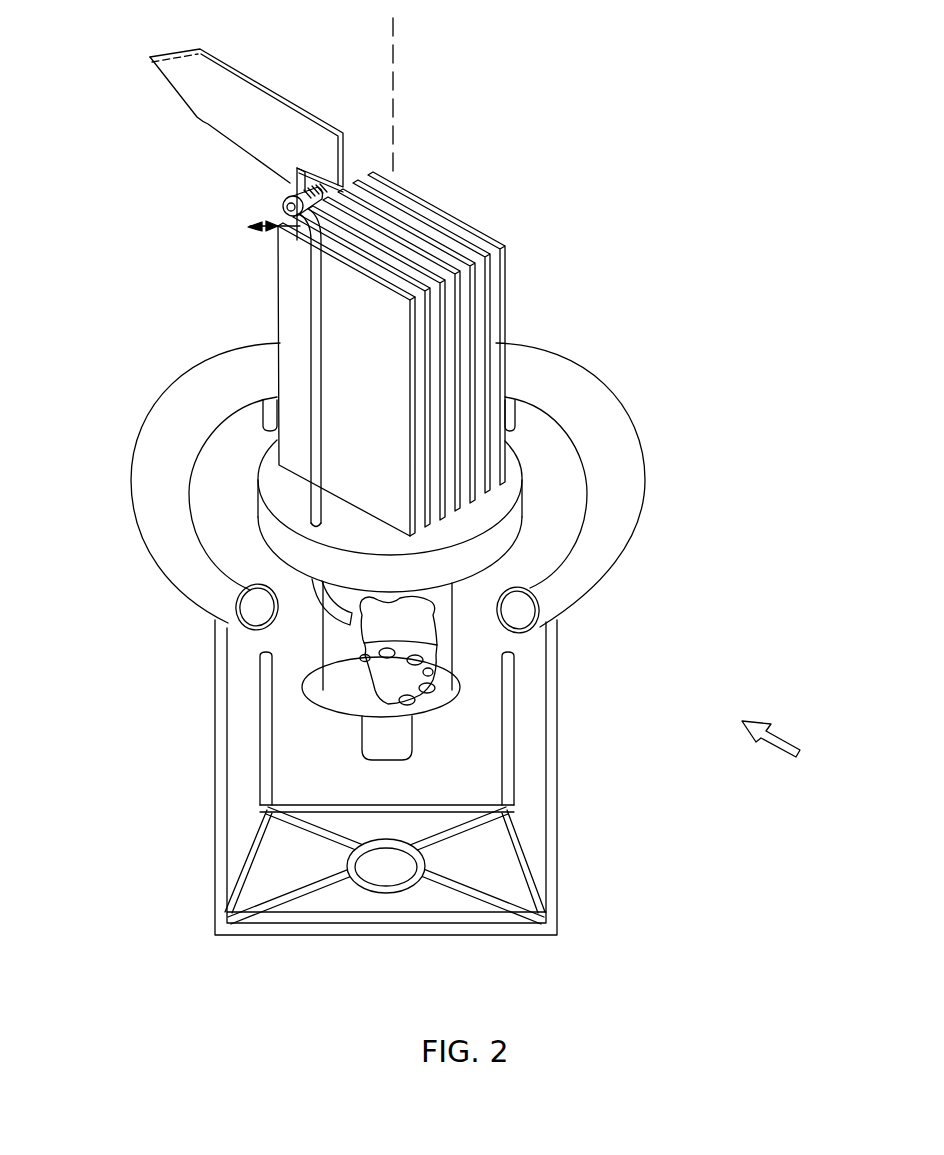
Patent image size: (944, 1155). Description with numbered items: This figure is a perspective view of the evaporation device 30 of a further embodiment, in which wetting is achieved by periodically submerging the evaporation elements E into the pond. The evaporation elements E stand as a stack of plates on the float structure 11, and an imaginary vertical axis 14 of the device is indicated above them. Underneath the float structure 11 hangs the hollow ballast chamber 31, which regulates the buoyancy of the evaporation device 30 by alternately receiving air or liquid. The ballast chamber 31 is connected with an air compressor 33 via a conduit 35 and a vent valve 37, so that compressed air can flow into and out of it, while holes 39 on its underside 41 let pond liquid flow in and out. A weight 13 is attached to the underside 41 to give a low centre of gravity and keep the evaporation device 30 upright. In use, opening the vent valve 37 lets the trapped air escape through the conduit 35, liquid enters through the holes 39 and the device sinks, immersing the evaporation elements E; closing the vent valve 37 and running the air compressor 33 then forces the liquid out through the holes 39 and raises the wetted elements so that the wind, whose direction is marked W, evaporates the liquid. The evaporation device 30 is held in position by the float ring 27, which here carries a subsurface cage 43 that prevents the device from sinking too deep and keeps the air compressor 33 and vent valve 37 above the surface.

The float structure 11 is at (502, 530).
The weight 13 is at (398, 750).
The imaginary vertical axis 14 is at (394, 58).
The float ring 27 is at (592, 580).
The evaporation device 30 is at (553, 212).
The ballast chamber 31 is at (417, 623).
The air compressor 33 is at (264, 212).
The conduit 35 is at (313, 352).
The vent valve 37 is at (257, 229).
The holes 39 is at (410, 668).
The underside 41 is at (306, 704).
The subsurface cage 43 is at (220, 818).
The evaporation elements E is at (466, 364).
The water flow direction W is at (779, 739).